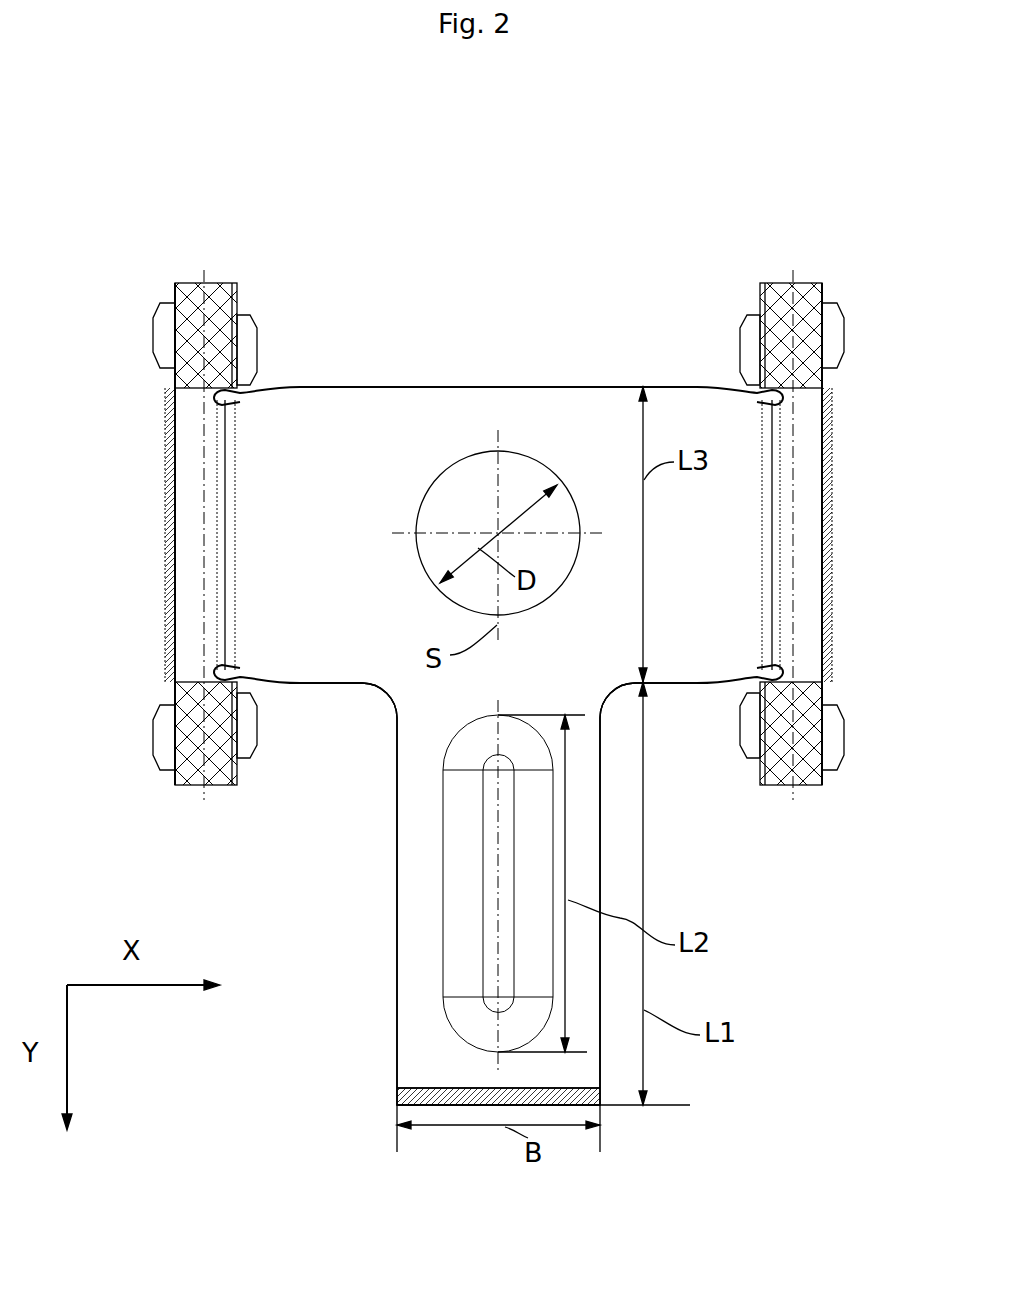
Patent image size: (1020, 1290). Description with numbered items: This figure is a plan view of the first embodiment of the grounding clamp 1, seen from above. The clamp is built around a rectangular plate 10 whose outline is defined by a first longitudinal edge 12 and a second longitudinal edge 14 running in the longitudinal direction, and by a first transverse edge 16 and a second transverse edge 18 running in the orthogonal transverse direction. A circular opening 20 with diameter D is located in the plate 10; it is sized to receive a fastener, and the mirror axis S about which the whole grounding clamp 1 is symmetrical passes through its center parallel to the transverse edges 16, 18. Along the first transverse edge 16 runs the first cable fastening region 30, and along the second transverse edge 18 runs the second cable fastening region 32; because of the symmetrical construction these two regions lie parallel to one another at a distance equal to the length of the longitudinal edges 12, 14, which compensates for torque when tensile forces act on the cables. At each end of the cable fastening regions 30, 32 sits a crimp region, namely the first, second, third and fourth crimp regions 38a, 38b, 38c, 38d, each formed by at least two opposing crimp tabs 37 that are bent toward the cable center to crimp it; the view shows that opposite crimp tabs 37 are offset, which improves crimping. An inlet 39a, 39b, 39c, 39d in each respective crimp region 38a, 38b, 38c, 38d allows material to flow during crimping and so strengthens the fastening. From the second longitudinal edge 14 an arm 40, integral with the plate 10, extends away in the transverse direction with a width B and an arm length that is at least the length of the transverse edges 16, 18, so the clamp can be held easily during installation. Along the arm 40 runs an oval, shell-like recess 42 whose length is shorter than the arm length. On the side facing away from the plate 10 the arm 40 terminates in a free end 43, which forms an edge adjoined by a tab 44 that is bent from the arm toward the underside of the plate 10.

The grounding clamp 1 is at (867, 977).
The plate 10 is at (362, 394).
The first longitudinal edge 12 is at (512, 387).
The second longitudinal edge 14 is at (372, 708).
The first transverse edge 16 is at (762, 534).
The second transverse edge 18 is at (240, 500).
The opening 20 is at (470, 490).
The first cable fastening region 30 is at (832, 535).
The second cable fastening region 32 is at (162, 530).
The crimp tabs 37 is at (248, 346).
The first crimp region 38a is at (790, 788).
The second crimp region 38b is at (818, 342).
The third crimp region 38c is at (184, 786).
The fourth crimp region 38d is at (177, 376).
The first inlet 39a is at (750, 690).
The second inlet 39b is at (752, 393).
The third inlet 39c is at (236, 688).
The fourth inlet 39d is at (246, 389).
The arm 40 is at (417, 855).
The recess 42 is at (487, 918).
The free end 43 is at (450, 1097).
The tab 44 is at (450, 1097).